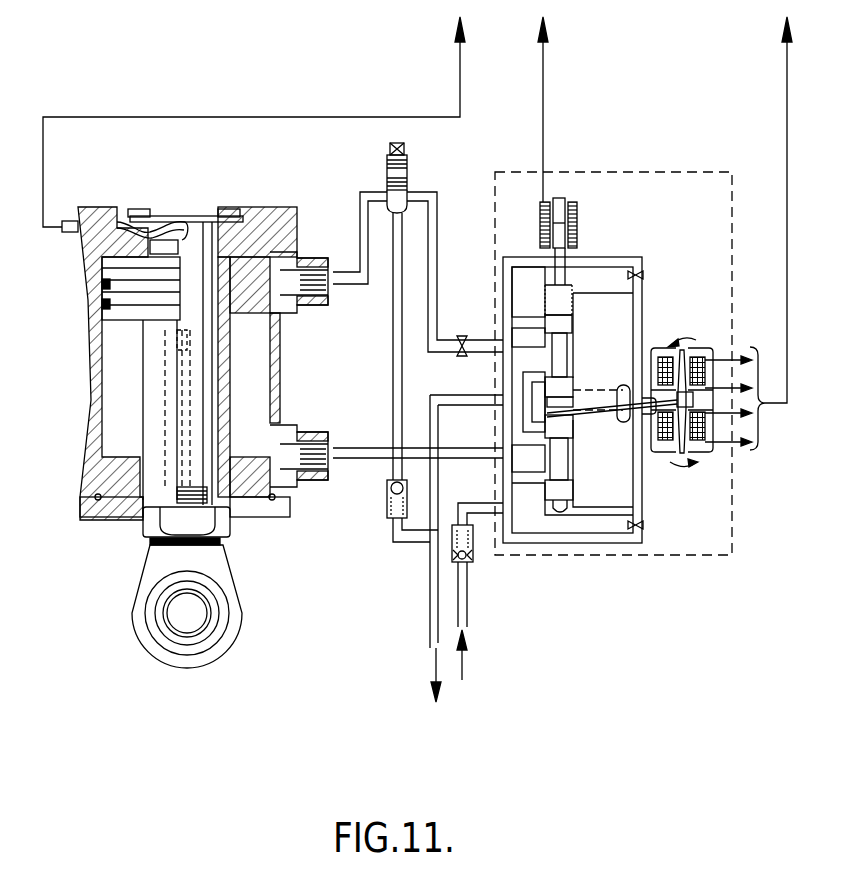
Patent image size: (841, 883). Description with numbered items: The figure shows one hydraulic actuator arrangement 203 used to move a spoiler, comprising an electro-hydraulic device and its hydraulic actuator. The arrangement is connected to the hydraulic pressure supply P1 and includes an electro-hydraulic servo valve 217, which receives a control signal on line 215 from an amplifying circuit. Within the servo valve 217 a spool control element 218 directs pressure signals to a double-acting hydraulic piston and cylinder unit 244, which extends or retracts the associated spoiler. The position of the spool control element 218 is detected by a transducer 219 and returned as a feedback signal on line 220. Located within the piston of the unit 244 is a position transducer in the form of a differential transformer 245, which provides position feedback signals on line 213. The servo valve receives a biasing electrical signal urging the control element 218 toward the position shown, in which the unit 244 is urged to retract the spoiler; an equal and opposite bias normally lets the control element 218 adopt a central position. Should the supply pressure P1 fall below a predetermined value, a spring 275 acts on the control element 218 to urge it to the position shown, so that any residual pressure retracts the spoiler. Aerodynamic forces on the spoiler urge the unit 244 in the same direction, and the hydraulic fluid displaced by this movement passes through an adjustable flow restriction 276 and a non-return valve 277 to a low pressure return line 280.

The hydraulic actuator arrangement 203 is at (287, 692).
The position feedback signal line 213 is at (460, 80).
The control signal line 215 is at (787, 80).
The electro-hydraulic servo valve 217 is at (620, 548).
The spool control element 218 is at (556, 492).
The transducer 219 is at (578, 215).
The feedback signal line 220 is at (545, 90).
The double-acting hydraulic piston and cylinder unit 244 is at (86, 394).
The differential transformer 245 is at (212, 200).
The spring 275 is at (546, 285).
The adjustable flow restriction 276 is at (400, 196).
The non-return valve 277 is at (388, 497).
The low pressure return line 280 is at (432, 636).
The hydraulic pressure supply P1 is at (478, 591).